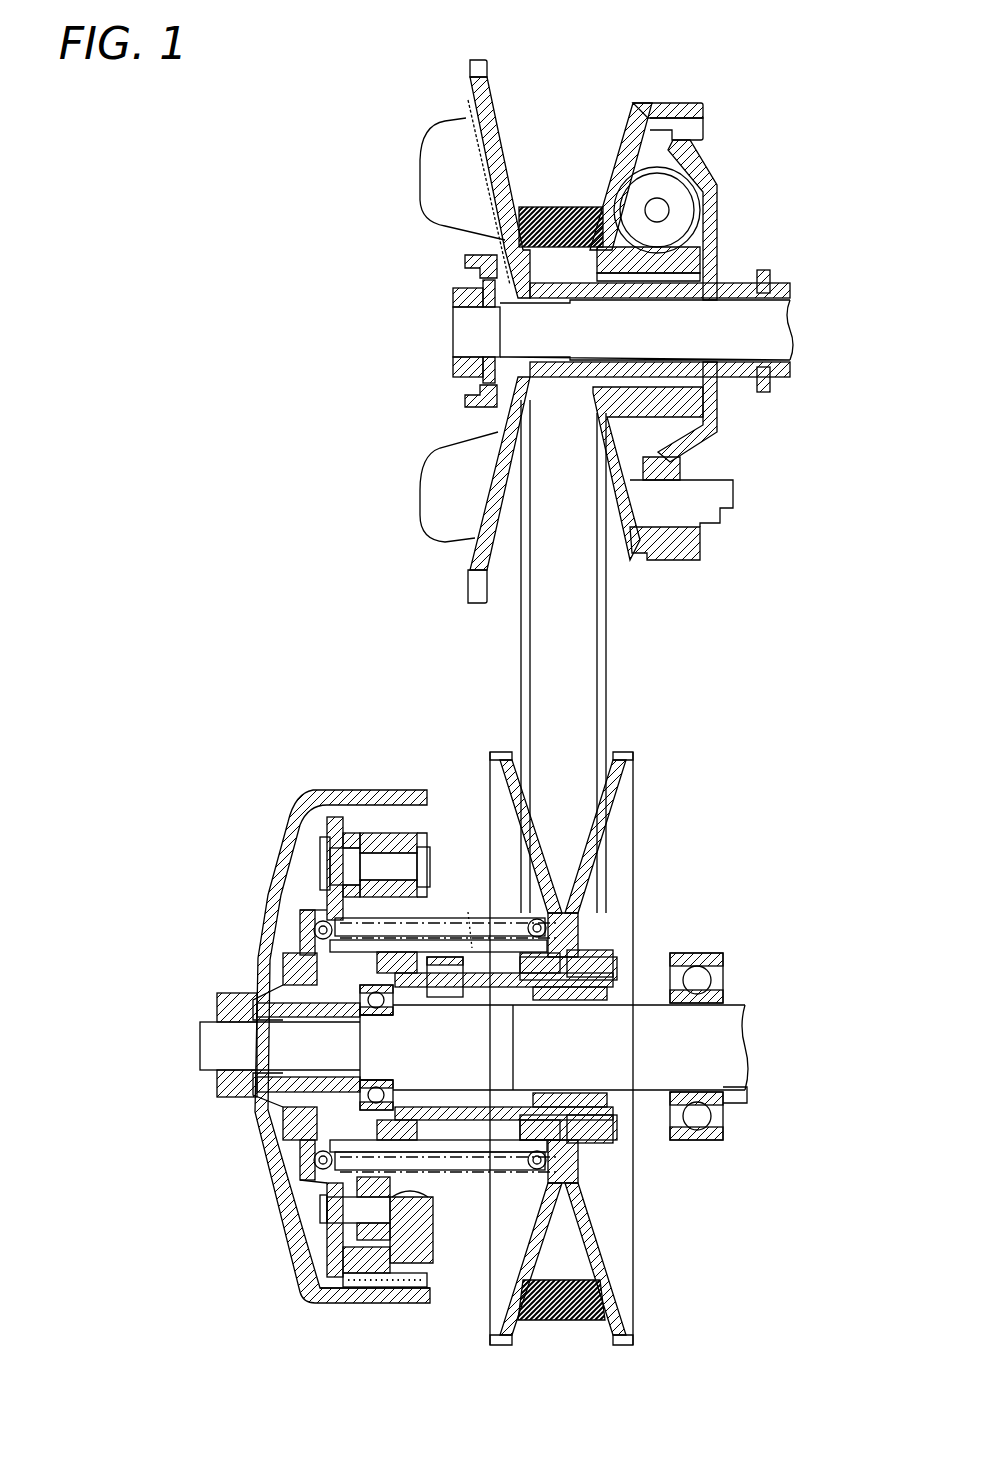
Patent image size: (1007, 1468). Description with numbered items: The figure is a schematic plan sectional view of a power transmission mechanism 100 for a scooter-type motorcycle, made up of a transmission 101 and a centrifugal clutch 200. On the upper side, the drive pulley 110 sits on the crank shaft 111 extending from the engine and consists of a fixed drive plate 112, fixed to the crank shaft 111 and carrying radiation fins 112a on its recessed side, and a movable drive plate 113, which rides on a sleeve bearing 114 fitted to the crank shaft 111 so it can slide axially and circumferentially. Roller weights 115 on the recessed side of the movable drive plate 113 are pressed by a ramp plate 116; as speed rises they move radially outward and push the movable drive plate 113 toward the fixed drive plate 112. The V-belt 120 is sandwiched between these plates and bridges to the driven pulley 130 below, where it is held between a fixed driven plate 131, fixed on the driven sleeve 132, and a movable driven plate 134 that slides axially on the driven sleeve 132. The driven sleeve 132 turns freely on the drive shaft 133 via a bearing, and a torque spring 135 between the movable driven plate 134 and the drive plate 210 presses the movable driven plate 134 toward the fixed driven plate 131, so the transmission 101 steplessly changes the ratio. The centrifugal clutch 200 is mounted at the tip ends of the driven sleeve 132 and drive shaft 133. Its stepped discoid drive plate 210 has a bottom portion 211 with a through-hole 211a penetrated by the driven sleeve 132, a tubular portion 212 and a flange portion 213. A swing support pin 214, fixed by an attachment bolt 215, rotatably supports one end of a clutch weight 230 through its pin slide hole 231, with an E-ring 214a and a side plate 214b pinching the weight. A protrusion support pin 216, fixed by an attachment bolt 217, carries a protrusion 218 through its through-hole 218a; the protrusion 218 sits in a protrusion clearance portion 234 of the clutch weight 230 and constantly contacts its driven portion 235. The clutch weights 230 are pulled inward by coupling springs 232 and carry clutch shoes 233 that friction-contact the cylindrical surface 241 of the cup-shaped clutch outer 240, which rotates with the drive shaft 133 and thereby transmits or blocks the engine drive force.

The power transmission mechanism 100 is at (270, 292).
The transmission 101 is at (725, 109).
The drive pulley 110 is at (605, 50).
The crank shaft 111 is at (790, 327).
The fixed drive plate 112 is at (515, 117).
The radiation fins 112a is at (415, 161).
The movable drive plate 113 is at (622, 130).
The sleeve bearing 114 is at (560, 380).
The roller weight 115 is at (698, 163).
The ramp plate 116 is at (720, 222).
The V-belt 120 is at (560, 203).
The driven pulley 130 is at (748, 695).
The fixed driven plate 131 is at (627, 752).
The driven sleeve 132 is at (620, 960).
The drive shaft 133 is at (742, 1040).
The movable driven plate 134 is at (500, 752).
The torque spring 135 is at (468, 910).
The centrifugal clutch 200 is at (235, 803).
The drive plate 210 is at (300, 925).
The bottom portion 211 is at (315, 955).
The through-hole 211a is at (280, 985).
The tubular portion 212 is at (345, 922).
The flange portion 213 is at (343, 817).
The swing support pin 214 is at (372, 833).
The E-ring 214a is at (418, 872).
The side plate 214b is at (430, 840).
The attachment bolt 215 is at (320, 858).
The protrusion support pin 216 is at (340, 1240).
The attachment bolt 217 is at (320, 1208).
The protrusion 218 is at (330, 1160).
The through-hole 218a is at (355, 1200).
The clutch weight 230 is at (380, 835).
The pin slide hole 231 is at (350, 868).
The coupling spring 232 is at (435, 1210).
The clutch shoe 233 is at (427, 1287).
The protrusion clearance portion 234 is at (346, 1295).
The driven portion 235 is at (390, 1283).
The clutch outer 240 is at (292, 825).
The cylindrical surface 241 is at (320, 1283).